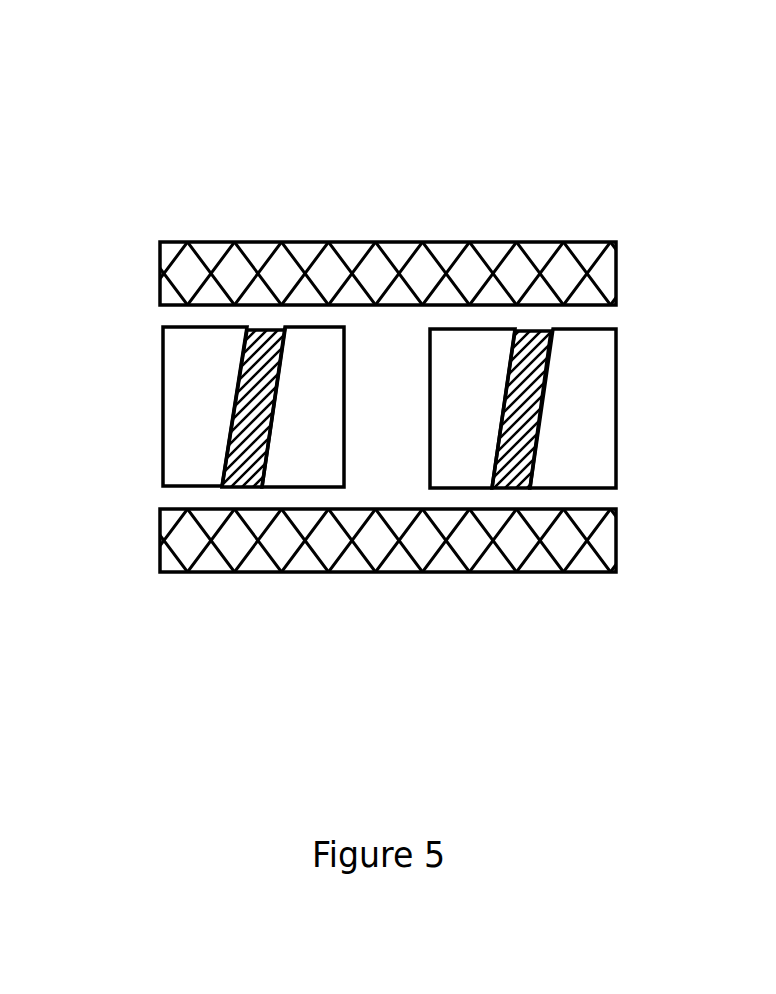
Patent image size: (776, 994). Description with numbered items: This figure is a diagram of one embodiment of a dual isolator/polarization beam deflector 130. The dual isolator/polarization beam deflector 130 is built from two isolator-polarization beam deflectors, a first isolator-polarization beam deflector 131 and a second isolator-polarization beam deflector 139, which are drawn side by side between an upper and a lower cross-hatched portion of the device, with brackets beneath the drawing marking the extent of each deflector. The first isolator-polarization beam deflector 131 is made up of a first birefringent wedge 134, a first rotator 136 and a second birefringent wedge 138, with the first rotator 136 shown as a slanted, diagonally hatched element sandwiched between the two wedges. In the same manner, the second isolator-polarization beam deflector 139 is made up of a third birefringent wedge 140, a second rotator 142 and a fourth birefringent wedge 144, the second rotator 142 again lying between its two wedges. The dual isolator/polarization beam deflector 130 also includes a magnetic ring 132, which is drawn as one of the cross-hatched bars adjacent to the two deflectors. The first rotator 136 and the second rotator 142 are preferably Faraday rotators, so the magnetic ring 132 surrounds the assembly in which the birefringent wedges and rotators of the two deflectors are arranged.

The dual isolator/polarization beam deflector 130 is at (415, 83).
The first isolator-polarization beam deflector 131 is at (148, 697).
The magnetic ring 132 is at (363, 573).
The first birefringent wedge 134 is at (163, 418).
The first rotator 136 is at (238, 385).
The second birefringent wedge 138 is at (303, 327).
The second isolator-polarization beam deflector 139 is at (435, 708).
The third birefringent wedge 140 is at (432, 375).
The second rotator 142 is at (526, 330).
The fourth birefringent wedge 144 is at (617, 365).